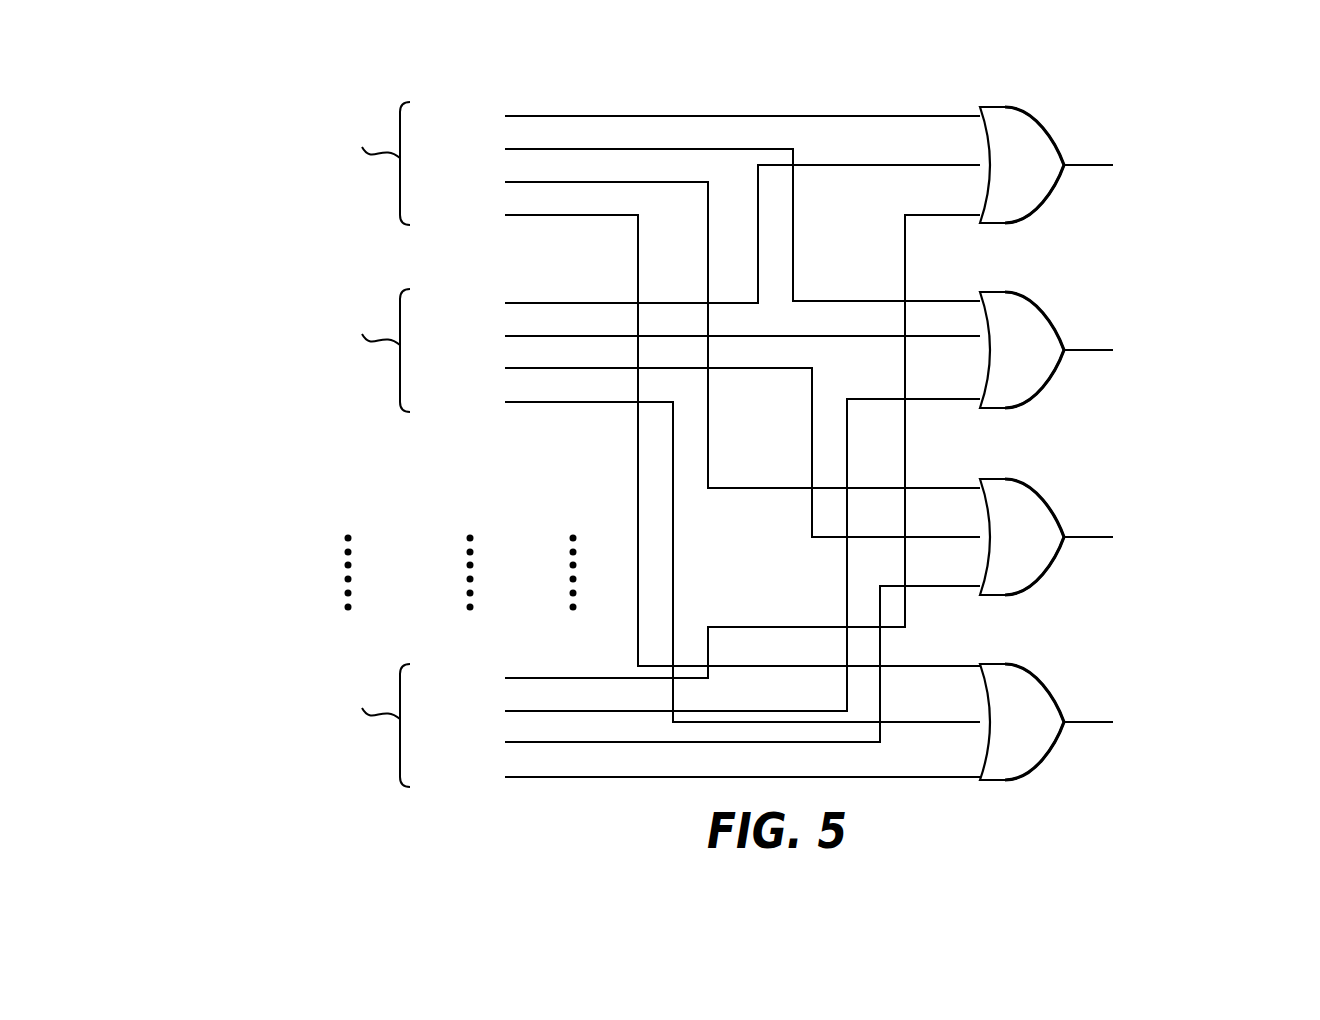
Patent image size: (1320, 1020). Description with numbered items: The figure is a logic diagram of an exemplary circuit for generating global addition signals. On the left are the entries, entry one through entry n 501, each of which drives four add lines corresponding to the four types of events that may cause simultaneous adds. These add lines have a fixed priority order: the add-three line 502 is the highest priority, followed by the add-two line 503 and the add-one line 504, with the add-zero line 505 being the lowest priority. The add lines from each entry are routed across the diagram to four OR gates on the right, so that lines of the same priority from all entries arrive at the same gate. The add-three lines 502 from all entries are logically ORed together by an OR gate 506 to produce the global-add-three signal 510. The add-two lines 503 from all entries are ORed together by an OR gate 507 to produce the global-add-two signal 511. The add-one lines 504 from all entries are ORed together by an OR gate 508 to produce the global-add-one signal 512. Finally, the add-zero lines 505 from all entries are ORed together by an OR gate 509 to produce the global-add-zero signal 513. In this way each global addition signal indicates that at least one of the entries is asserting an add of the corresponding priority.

The entries 501 is at (255, 148).
The add line add[3] 502 is at (506, 114).
The add line add[2] 503 is at (506, 147).
The add line add[1] 504 is at (506, 180).
The add line add[0] 505 is at (506, 213).
The OR gate 506 is at (1043, 177).
The OR gate 507 is at (1043, 362).
The OR gate 508 is at (1043, 549).
The OR gate 509 is at (1043, 734).
The Global_Add[3] signal 510 is at (1110, 128).
The Global_Add[2] signal 511 is at (1110, 313).
The Global_Add[1] signal 512 is at (1110, 500).
The Global_Add[0] signal 513 is at (1110, 685).